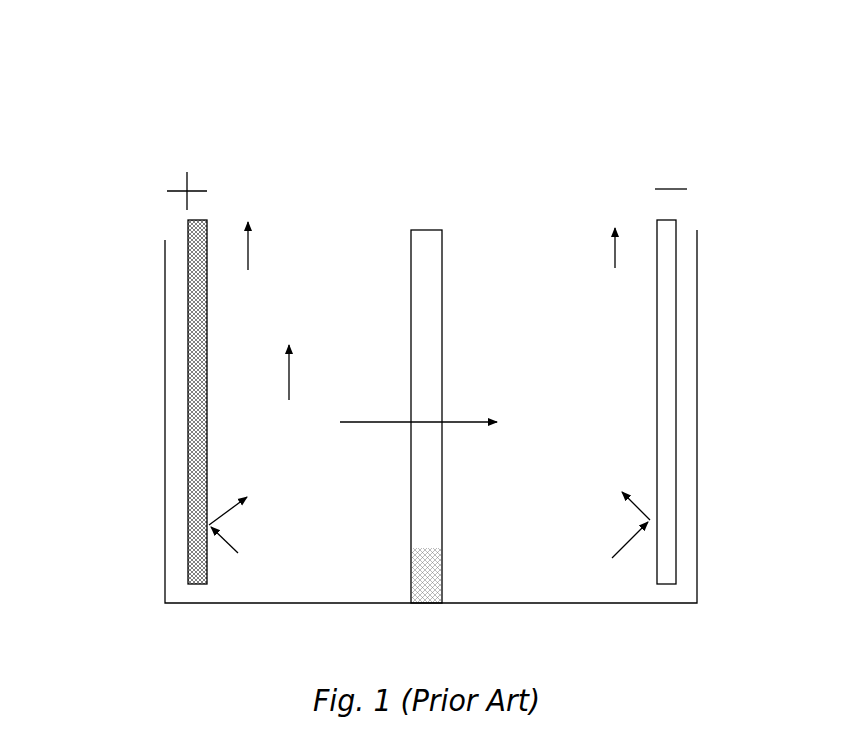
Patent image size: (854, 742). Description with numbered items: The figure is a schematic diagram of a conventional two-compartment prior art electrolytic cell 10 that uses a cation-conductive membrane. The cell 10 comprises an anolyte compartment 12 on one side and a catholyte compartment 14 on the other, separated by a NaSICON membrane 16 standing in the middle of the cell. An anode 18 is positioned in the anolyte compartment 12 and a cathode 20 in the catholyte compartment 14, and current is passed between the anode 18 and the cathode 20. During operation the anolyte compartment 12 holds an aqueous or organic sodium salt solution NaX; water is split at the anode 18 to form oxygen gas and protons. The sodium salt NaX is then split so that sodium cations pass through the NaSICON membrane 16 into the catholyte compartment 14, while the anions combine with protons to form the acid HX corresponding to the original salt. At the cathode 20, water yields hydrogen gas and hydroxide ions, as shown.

The electrolytic cell 10 is at (183, 97).
The anolyte compartment 12 is at (353, 386).
The catholyte compartment 14 is at (576, 386).
The NaSICON membrane 16 is at (427, 230).
The anode 18 is at (188, 392).
The cathode 20 is at (678, 391).